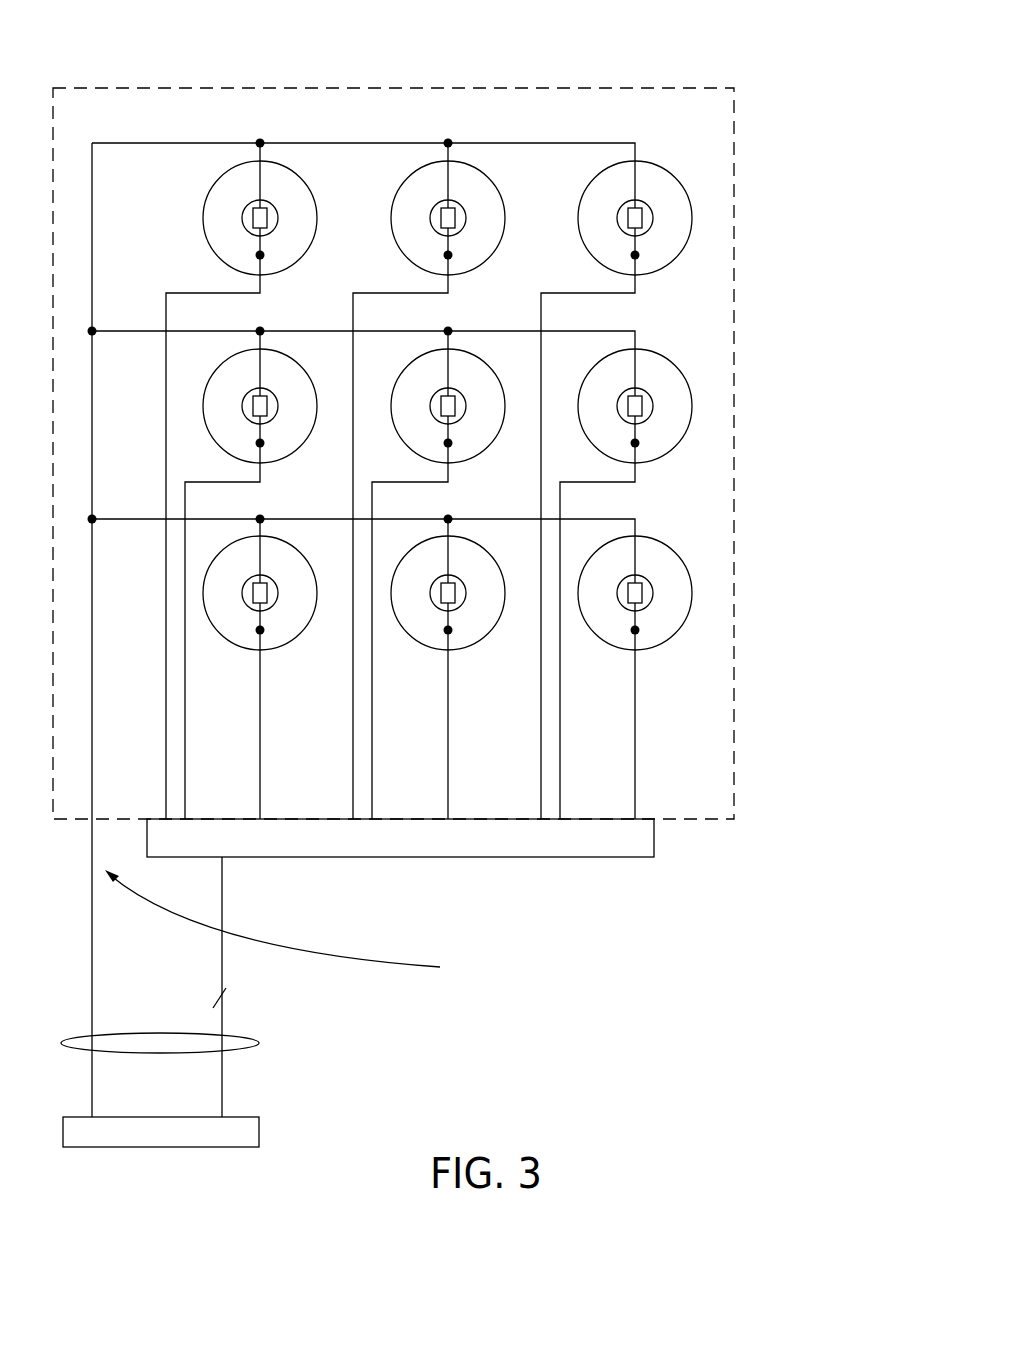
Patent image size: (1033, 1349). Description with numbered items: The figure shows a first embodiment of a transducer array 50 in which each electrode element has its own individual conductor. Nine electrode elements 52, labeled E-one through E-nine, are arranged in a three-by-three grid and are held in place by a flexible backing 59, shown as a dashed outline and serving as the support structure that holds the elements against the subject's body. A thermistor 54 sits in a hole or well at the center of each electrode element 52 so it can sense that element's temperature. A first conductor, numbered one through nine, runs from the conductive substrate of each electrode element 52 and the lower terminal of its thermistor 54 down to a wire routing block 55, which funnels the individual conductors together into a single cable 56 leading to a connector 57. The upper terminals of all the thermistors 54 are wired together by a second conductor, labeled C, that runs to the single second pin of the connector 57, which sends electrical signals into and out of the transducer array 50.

The transducer array 50 is at (591, 50).
The electrode element 52 is at (221, 181).
The thermistor 54 is at (252, 215).
The wire routing block 55 is at (655, 857).
The cable 56 is at (258, 1043).
The connector 57 is at (260, 1117).
The flexible backing 59 is at (734, 405).